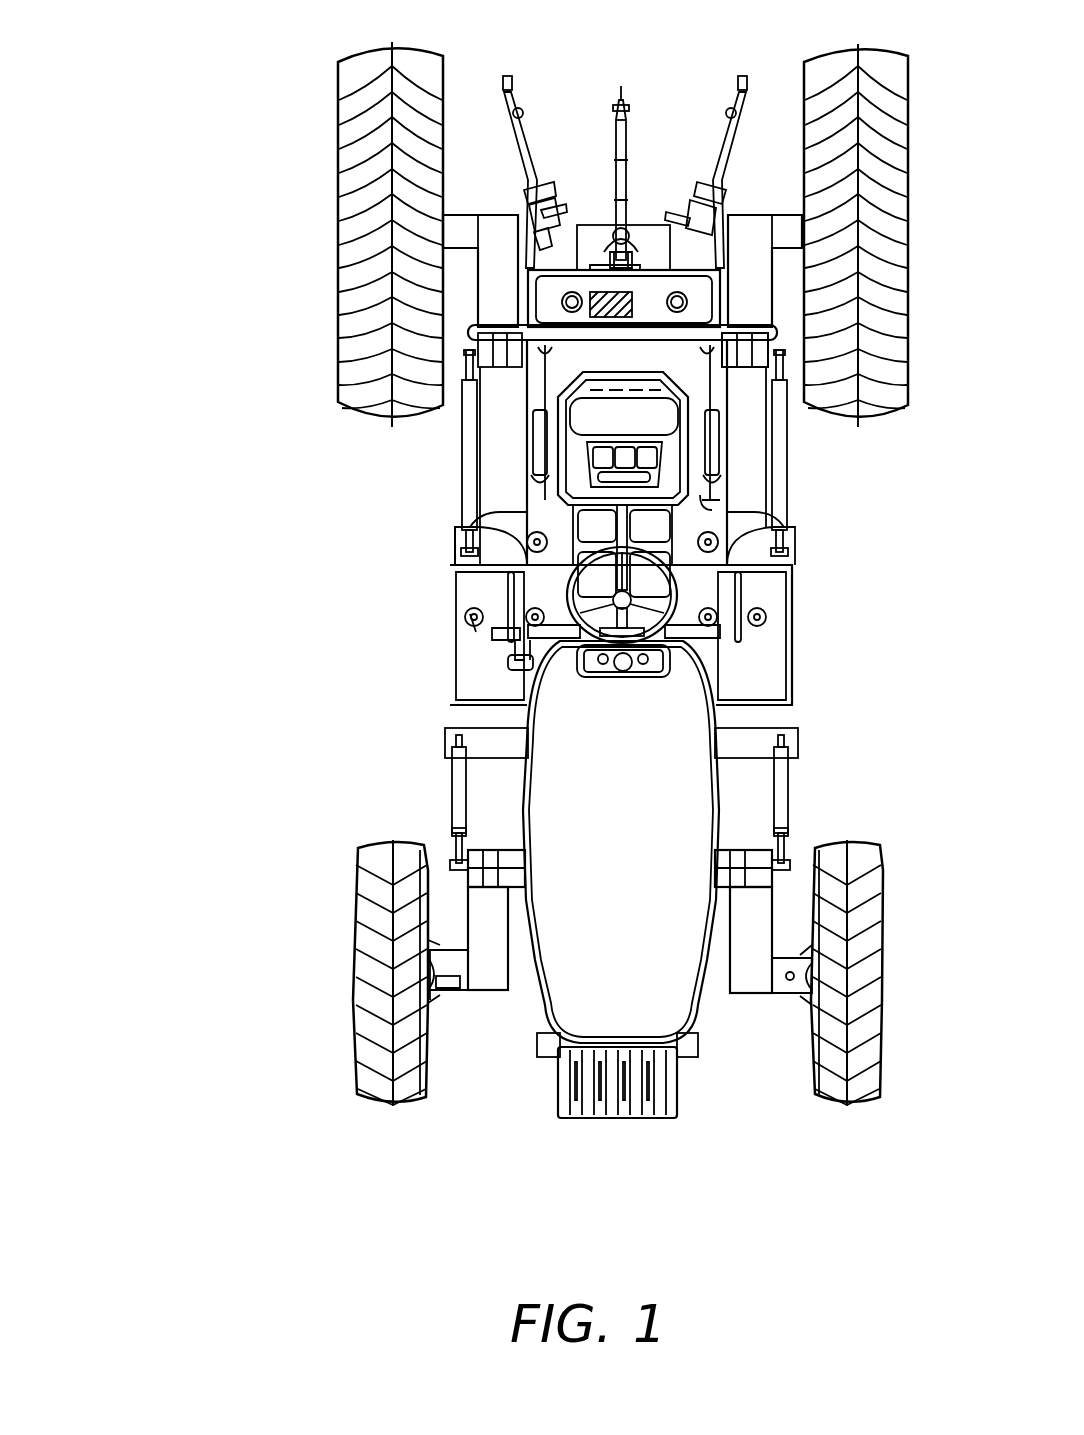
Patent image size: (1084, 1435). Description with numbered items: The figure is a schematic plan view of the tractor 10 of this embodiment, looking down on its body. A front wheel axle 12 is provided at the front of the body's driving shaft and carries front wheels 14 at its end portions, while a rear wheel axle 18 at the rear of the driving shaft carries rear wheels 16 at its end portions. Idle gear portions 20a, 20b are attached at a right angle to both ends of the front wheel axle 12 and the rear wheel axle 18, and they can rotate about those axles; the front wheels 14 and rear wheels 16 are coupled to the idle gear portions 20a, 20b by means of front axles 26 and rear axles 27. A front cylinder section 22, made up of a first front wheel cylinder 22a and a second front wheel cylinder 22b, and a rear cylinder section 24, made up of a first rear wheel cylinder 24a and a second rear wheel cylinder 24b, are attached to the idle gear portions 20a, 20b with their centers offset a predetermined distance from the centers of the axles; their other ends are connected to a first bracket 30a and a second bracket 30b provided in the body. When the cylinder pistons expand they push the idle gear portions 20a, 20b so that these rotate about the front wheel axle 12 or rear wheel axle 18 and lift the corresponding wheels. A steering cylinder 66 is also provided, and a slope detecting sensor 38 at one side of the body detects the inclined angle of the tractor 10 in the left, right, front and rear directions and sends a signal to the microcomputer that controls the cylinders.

The tractor 10 is at (196, 678).
The front wheel axle 12 is at (455, 880).
The front wheels 14 is at (353, 990).
The rear wheels 16 is at (345, 224).
The rear wheel axle 18 is at (747, 368).
The idle gear portion 20a is at (473, 918).
The idle gear portion 20b is at (750, 230).
The front cylinder section 22 is at (237, 765).
The first front wheel cylinder 22a is at (453, 803).
The second front wheel cylinder 22b is at (780, 797).
The rear cylinder section 24 is at (235, 470).
The first rear wheel cylinder 24a is at (462, 507).
The second rear wheel cylinder 24b is at (778, 446).
The front axles 26 is at (453, 965).
The rear axles 27 is at (459, 230).
The first bracket 30a is at (445, 723).
The second bracket 30b is at (460, 548).
The slope detecting sensor 38 is at (590, 292).
The steering cylinder 66 is at (445, 983).